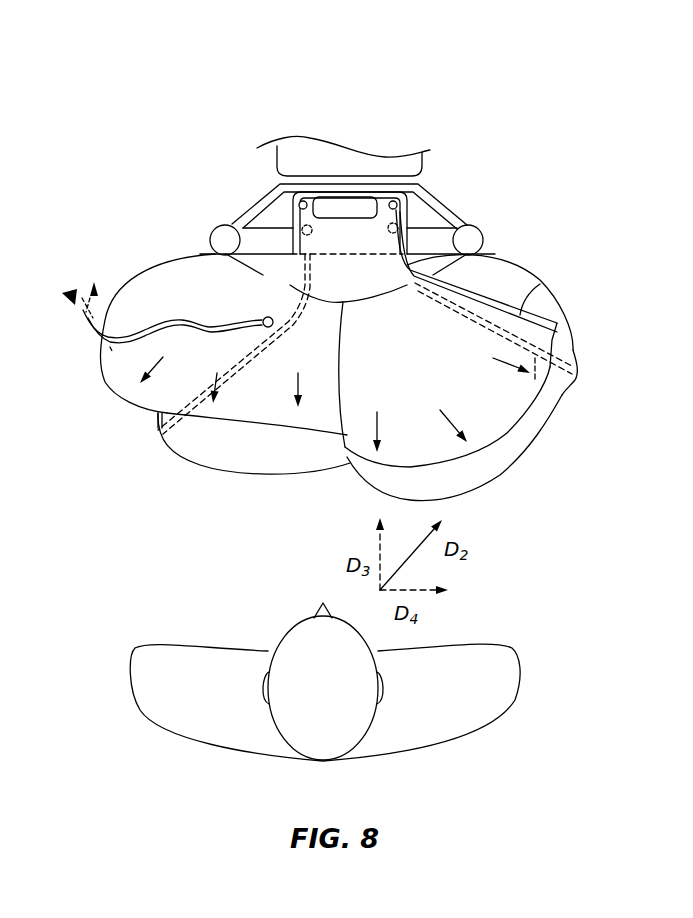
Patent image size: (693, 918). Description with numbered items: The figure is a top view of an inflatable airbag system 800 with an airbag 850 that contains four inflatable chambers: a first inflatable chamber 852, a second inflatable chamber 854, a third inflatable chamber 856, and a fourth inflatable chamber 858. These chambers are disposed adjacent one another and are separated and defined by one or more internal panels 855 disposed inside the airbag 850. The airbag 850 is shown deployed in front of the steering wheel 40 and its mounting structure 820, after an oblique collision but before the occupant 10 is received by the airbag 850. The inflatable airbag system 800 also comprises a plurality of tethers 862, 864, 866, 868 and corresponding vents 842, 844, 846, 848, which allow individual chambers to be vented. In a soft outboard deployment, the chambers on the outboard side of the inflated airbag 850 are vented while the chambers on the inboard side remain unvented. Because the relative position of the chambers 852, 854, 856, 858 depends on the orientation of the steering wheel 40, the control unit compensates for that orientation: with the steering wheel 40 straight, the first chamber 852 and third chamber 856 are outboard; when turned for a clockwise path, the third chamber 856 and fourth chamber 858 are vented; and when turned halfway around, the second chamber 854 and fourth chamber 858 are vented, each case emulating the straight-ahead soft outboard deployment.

The inflatable airbag system 800 is at (203, 88).
The mounting frame 820 is at (410, 220).
The steering wheel 40 is at (472, 240).
The airbag 850 is at (520, 265).
The first inflatable chamber 852 is at (106, 384).
The second inflatable chamber 854 is at (480, 400).
The internal panel 855 is at (337, 385).
The third inflatable chamber 856 is at (210, 443).
The fourth inflatable chamber 858 is at (488, 468).
The tether 862 is at (182, 323).
The tether 864 is at (541, 285).
The tether 866 is at (245, 355).
The tether 868 is at (538, 388).
The vent 842 is at (80, 311).
The vent 844 is at (558, 318).
The vent 846 is at (157, 430).
The vent 848 is at (577, 351).
The occupant 10 is at (453, 702).